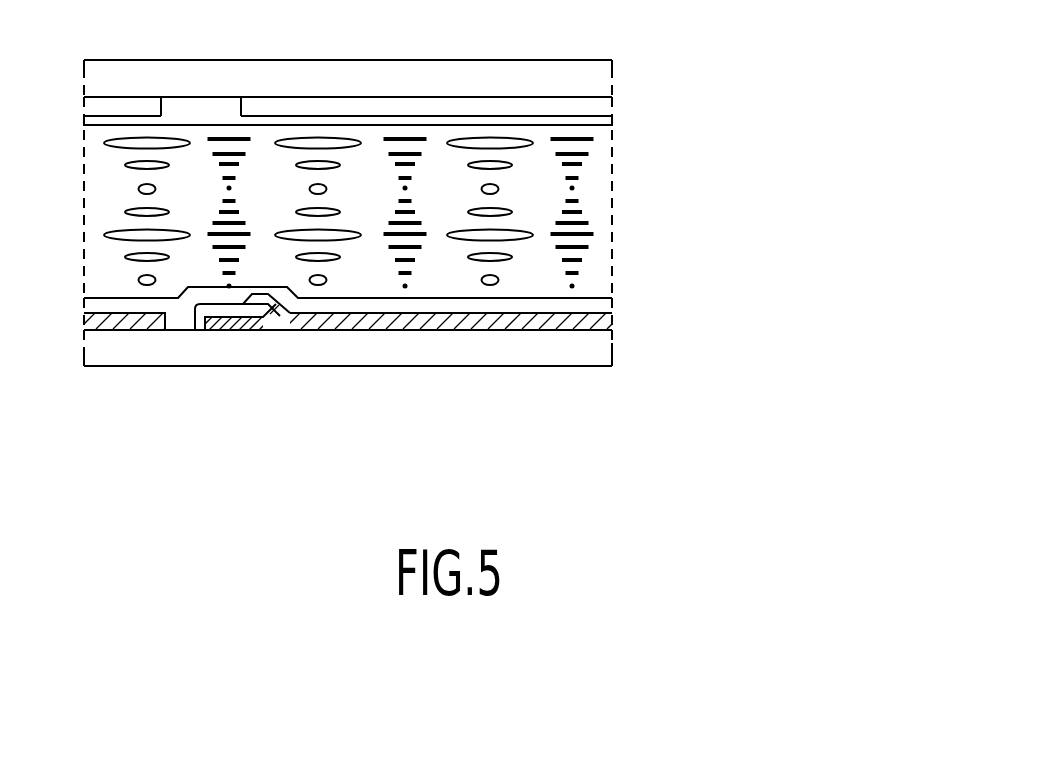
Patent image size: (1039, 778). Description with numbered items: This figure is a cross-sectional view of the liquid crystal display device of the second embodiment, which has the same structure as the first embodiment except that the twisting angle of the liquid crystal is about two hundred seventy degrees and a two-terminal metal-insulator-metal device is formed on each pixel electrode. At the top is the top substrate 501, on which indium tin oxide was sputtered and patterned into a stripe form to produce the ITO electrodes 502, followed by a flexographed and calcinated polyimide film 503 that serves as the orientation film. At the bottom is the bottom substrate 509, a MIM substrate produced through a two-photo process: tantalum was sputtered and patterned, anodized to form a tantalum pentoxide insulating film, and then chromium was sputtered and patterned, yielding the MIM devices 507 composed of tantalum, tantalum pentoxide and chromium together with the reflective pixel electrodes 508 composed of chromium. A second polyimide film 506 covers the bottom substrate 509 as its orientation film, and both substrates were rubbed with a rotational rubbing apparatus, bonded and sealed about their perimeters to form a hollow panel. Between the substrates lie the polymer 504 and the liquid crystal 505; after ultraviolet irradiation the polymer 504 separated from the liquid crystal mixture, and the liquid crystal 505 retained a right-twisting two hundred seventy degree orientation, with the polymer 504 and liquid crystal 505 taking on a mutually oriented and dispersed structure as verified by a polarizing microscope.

The top substrate 501 is at (603, 78).
The ITO electrodes 502 is at (603, 103).
The polyimide film 503 is at (603, 121).
The polymer 504 is at (503, 170).
The liquid crystal 505 is at (577, 227).
The polyimide film 506 is at (603, 301).
The MIM device 507 is at (258, 310).
The reflective pixel electrodes 508 is at (603, 318).
The bottom substrate 509 is at (610, 347).